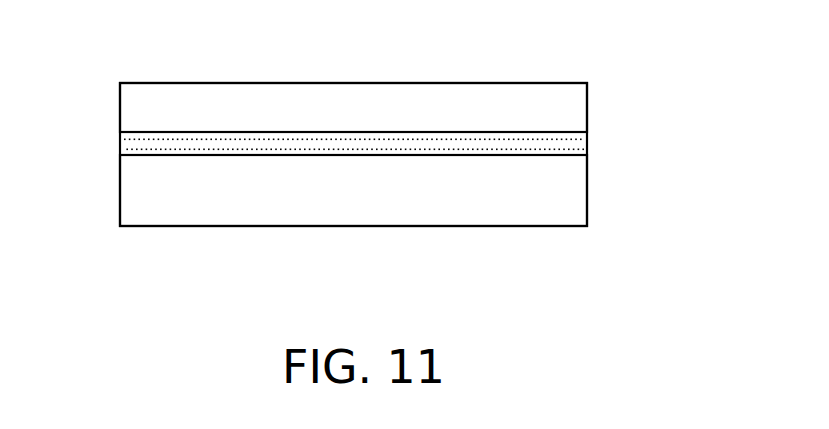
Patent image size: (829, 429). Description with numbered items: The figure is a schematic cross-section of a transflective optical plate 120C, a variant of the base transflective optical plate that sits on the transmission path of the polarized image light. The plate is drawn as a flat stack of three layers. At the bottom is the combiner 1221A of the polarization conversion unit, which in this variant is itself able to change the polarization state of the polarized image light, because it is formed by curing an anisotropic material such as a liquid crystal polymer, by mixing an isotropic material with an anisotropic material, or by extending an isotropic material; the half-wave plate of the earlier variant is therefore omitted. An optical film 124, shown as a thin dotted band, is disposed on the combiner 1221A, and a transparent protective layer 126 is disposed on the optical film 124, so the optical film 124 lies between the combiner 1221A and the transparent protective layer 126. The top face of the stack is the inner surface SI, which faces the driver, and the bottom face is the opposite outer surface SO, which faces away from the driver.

The transflective optical plate 120C is at (685, 311).
The transparent protective layer 126 is at (569, 112).
The optical film 124 is at (569, 146).
The combiner 1221A is at (567, 193).
The inner surface SI is at (138, 78).
The outer surface SO is at (136, 232).